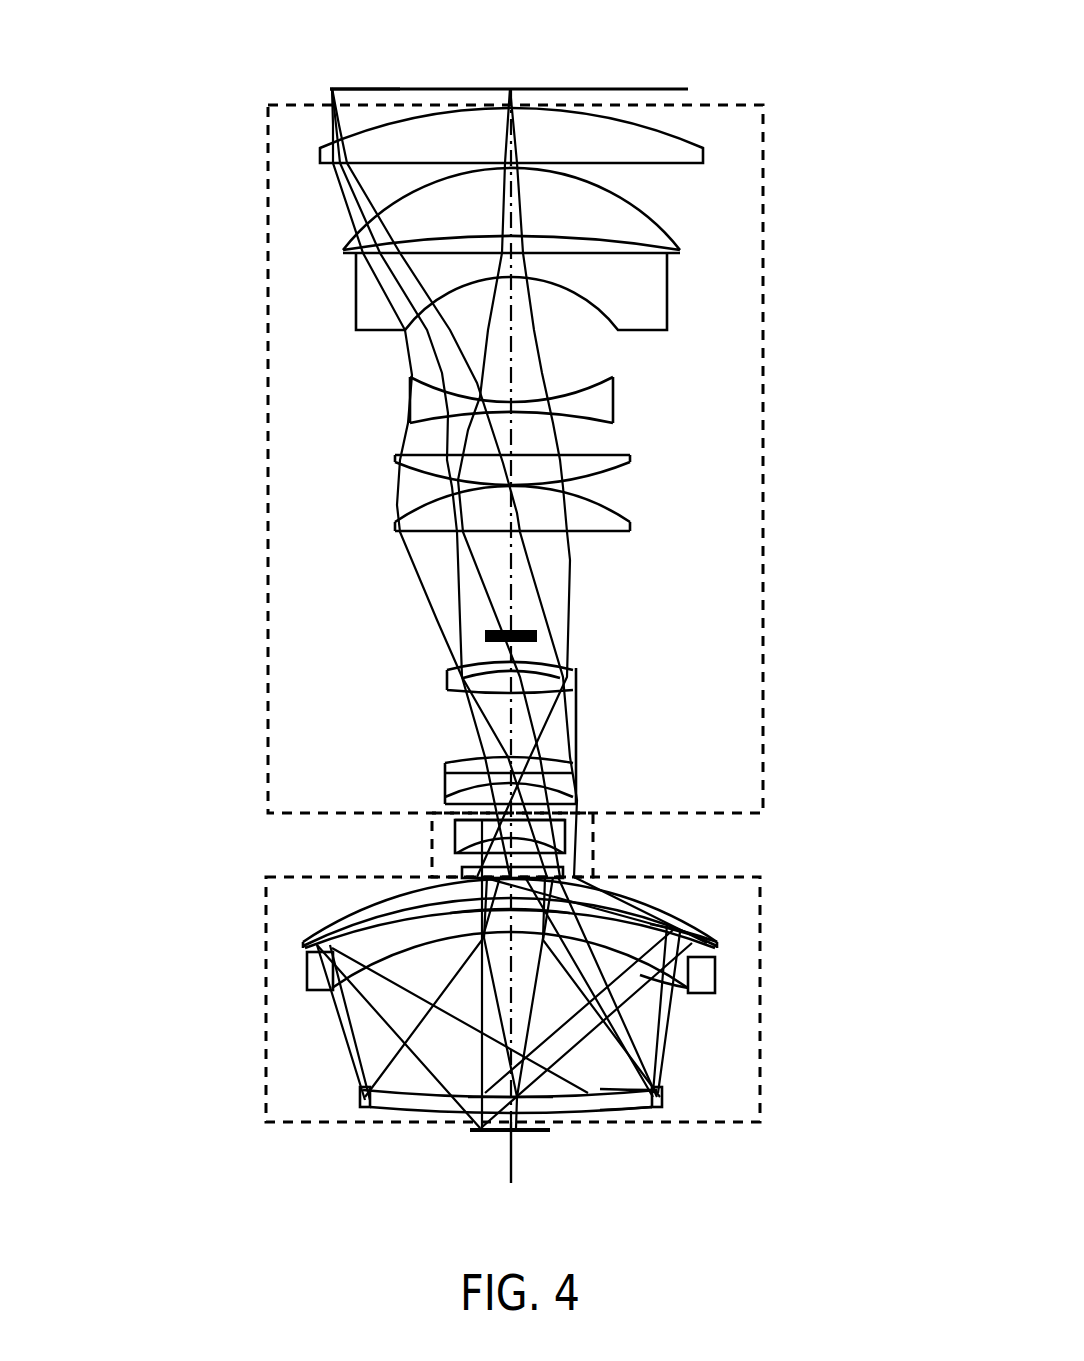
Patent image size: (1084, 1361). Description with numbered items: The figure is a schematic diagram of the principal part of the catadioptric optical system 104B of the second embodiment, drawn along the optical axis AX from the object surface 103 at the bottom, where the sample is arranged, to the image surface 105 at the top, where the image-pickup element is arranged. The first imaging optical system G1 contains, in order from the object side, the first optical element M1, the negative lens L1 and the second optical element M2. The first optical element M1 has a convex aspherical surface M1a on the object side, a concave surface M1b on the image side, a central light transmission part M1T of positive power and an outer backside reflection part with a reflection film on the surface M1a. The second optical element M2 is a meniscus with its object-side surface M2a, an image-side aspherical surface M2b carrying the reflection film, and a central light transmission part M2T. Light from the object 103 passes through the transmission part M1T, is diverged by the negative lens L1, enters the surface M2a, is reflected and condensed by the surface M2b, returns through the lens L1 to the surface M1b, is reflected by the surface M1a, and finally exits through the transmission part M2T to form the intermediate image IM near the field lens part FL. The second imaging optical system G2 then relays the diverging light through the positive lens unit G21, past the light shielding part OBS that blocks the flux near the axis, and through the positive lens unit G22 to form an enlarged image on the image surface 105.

The catadioptric optical system 104B is at (509, 44).
The image surface 105 is at (327, 92).
The second imaging optical system G2 is at (551, 459).
The lens unit G22 is at (715, 123).
The light shielding part OBS is at (537, 633).
The lens unit G21 is at (596, 660).
The intermediate image IM is at (525, 840).
The field lens part FL is at (551, 845).
The first imaging optical system G1 is at (545, 999).
The second optical element M2 is at (313, 940).
The light transmission part M2T is at (585, 906).
The surface on the image side M2b is at (708, 944).
The surface on the object side M2a is at (715, 957).
The negative lens L1 is at (308, 975).
The first optical element M1 is at (360, 1092).
The concave surface on the image side M1b is at (665, 1088).
The convex surface on the object side M1a is at (650, 1108).
The light transmission part M1T is at (467, 1123).
The optical axis AX is at (510, 1168).
The object surface 103 is at (513, 1133).